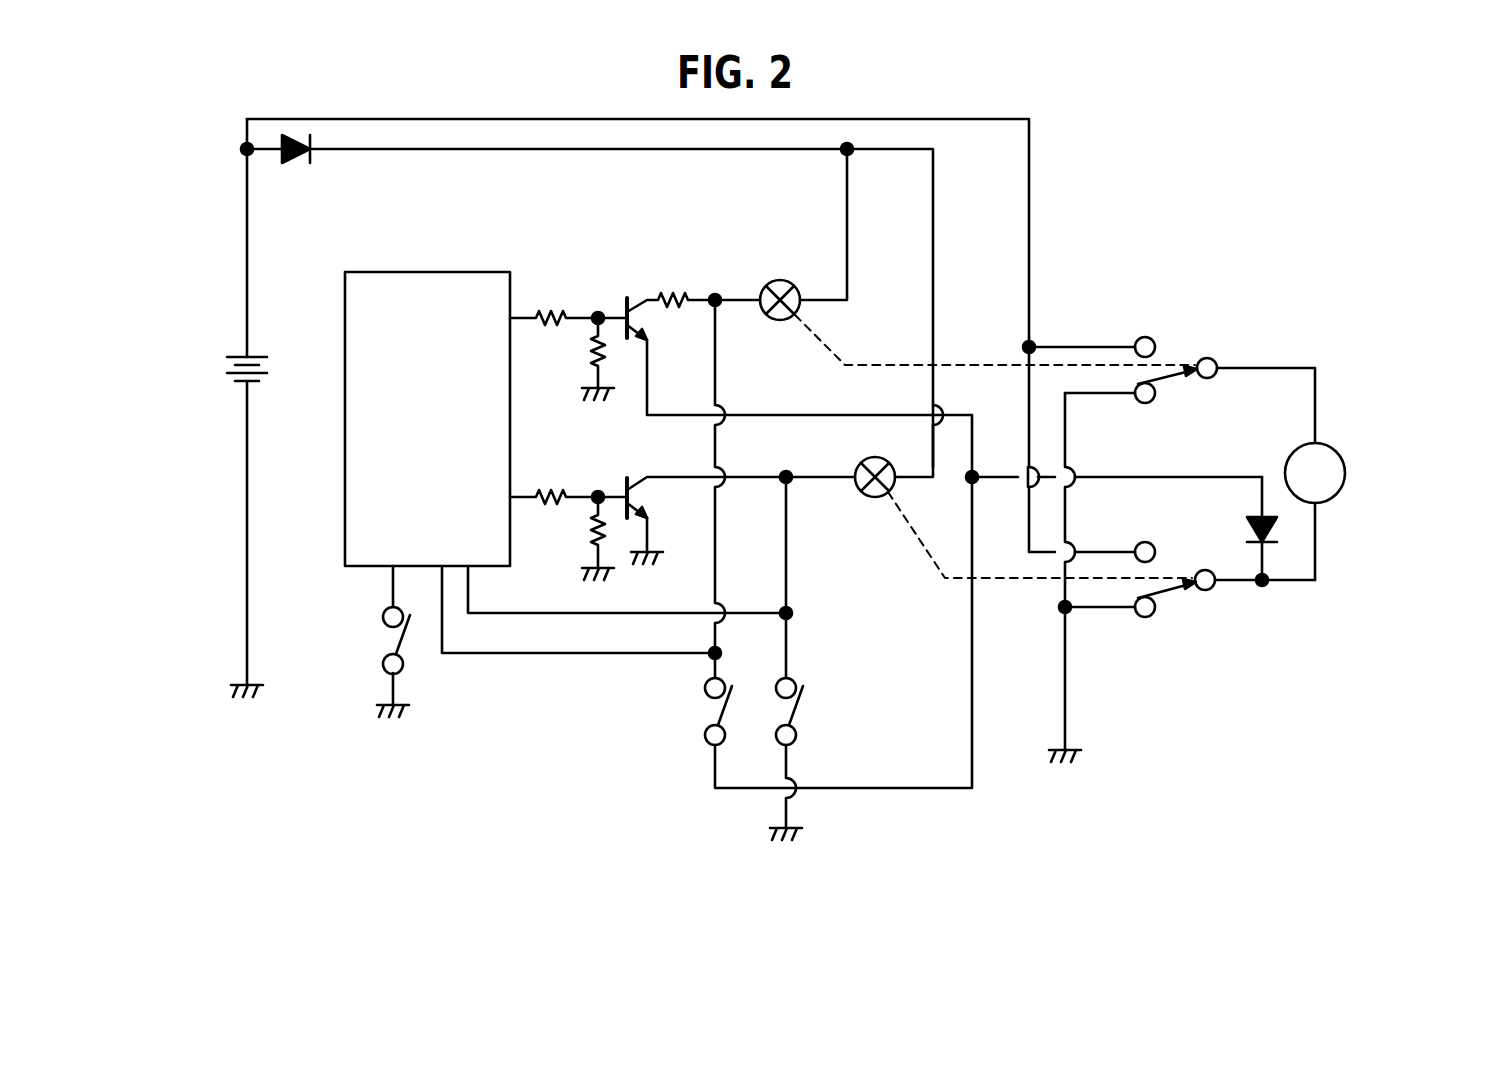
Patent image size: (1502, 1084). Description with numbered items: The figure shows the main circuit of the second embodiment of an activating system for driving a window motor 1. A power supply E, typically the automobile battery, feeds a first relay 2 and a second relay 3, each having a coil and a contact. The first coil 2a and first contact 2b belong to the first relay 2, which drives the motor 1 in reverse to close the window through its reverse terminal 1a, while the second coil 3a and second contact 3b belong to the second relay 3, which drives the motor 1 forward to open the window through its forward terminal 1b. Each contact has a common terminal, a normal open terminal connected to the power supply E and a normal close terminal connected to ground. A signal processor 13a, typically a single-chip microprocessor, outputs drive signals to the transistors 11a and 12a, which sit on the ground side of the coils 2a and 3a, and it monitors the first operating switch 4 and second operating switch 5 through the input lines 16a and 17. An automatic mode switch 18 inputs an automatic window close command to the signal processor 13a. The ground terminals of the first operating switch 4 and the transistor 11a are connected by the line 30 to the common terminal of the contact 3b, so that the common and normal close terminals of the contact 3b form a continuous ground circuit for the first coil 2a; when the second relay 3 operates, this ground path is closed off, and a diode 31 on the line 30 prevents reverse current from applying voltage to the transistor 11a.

The power supply E is at (245, 354).
The signal processor 13a is at (447, 272).
The transistor 11a is at (642, 300).
The transistor 12a is at (645, 477).
The first coil 2a is at (785, 280).
The second coil 3a is at (875, 497).
The first relay 2 is at (1048, 352).
The first contact 2b is at (1178, 355).
The second relay 3 is at (1027, 582).
The second contact 3b is at (1185, 595).
The line 30 is at (1219, 472).
The diode 31 is at (1315, 585).
The motor 1 is at (1346, 475).
The reverse terminal 1a is at (1315, 392).
The forward terminal 1b is at (1315, 546).
The automatic mode switch 18 is at (388, 636).
The input line 17 is at (610, 620).
The input line 16a is at (512, 657).
The first operating switch 4 is at (703, 710).
The second operating switch 5 is at (780, 712).